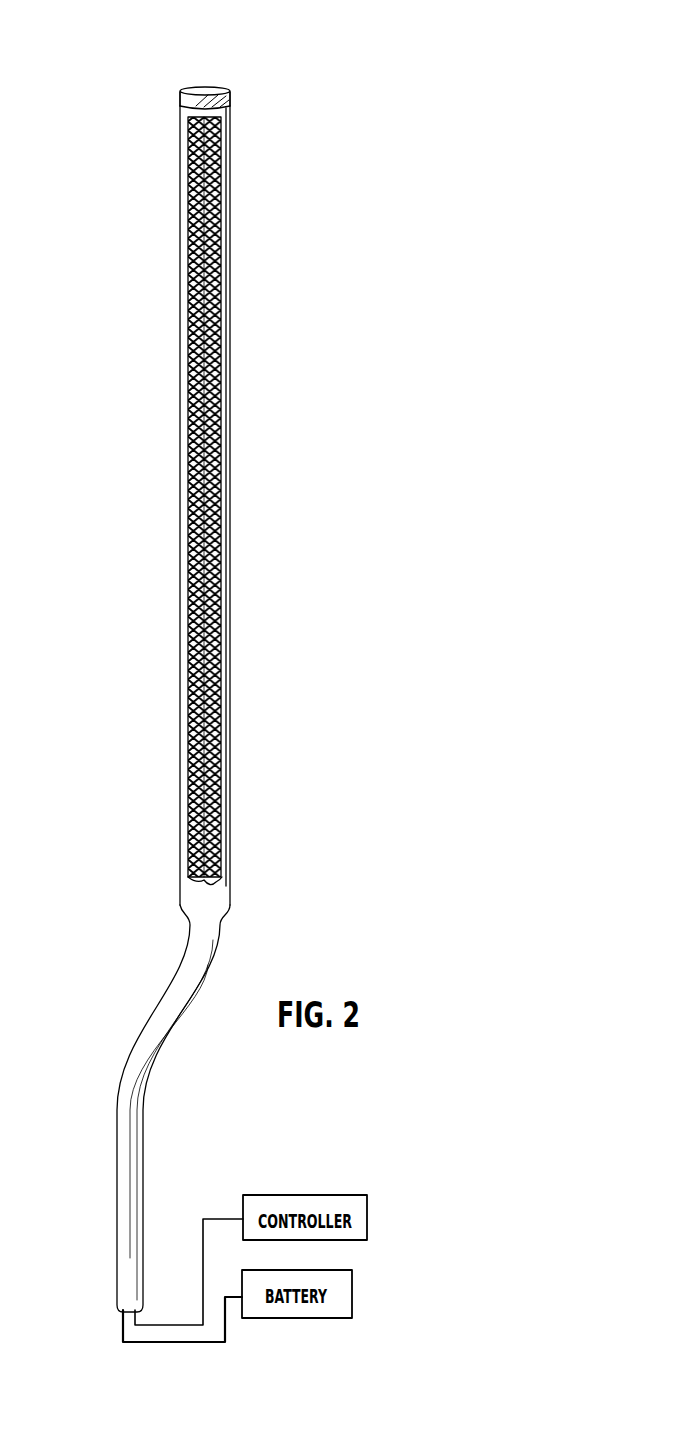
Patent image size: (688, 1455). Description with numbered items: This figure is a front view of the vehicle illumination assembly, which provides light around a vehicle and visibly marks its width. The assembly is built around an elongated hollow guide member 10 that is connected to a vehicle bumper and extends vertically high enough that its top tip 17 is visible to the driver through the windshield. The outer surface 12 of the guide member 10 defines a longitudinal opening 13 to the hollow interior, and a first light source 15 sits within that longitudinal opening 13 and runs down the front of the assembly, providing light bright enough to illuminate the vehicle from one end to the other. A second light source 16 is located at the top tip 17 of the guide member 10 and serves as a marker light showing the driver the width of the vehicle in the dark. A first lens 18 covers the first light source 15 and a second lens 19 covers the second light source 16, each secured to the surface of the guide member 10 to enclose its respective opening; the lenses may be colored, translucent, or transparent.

The guide member 10 is at (243, 102).
The outer surface 12 is at (228, 336).
The longitudinal opening 13 is at (190, 132).
The first light source 15 is at (213, 628).
The second light source 16 is at (228, 101).
The tip 17 is at (198, 86).
The first lens 18 is at (207, 887).
The second lens 19 is at (180, 98).